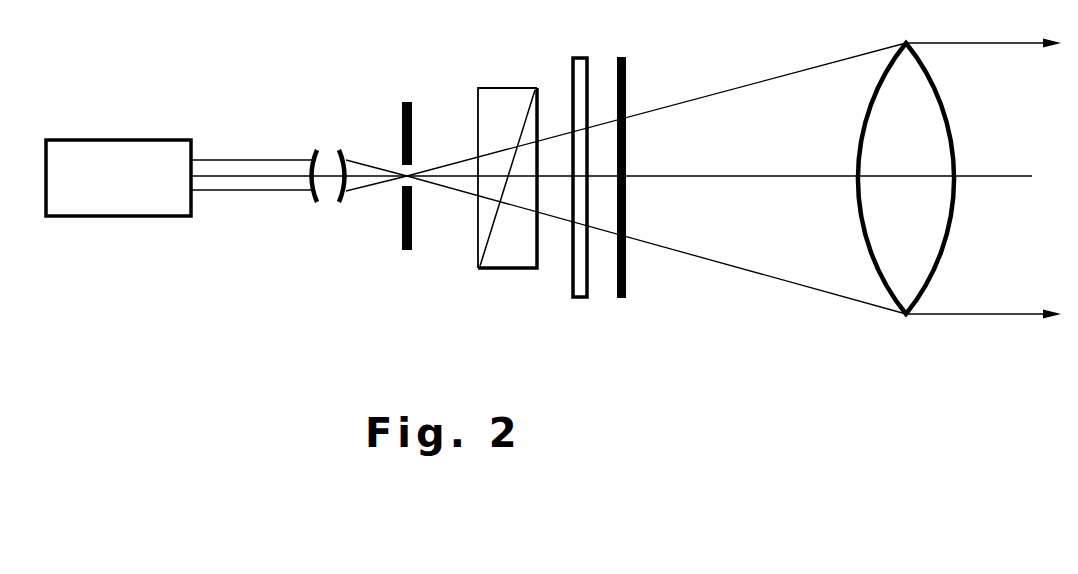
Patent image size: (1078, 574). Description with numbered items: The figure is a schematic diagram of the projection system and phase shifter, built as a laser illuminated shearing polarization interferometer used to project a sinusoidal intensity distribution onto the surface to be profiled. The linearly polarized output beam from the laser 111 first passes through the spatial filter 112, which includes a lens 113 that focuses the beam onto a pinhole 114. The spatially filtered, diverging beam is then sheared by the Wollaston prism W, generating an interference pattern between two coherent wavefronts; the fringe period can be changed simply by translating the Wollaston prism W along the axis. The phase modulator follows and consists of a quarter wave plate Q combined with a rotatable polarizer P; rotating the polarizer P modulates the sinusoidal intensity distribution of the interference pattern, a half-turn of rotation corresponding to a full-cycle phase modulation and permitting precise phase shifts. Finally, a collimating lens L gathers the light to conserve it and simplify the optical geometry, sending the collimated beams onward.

The laser 111 is at (124, 140).
The filter 112 is at (390, 163).
The lens 113 is at (315, 150).
The pinhole 114 is at (413, 122).
The Wollaston prism W is at (507, 164).
The quarter wave plate Q is at (580, 159).
The rotatable polarizer P is at (620, 159).
The collimating lens L is at (906, 163).